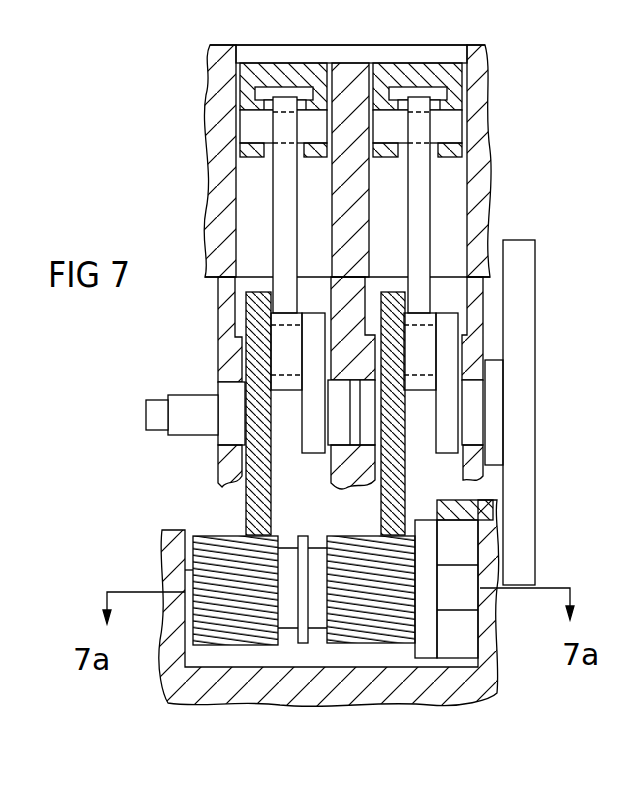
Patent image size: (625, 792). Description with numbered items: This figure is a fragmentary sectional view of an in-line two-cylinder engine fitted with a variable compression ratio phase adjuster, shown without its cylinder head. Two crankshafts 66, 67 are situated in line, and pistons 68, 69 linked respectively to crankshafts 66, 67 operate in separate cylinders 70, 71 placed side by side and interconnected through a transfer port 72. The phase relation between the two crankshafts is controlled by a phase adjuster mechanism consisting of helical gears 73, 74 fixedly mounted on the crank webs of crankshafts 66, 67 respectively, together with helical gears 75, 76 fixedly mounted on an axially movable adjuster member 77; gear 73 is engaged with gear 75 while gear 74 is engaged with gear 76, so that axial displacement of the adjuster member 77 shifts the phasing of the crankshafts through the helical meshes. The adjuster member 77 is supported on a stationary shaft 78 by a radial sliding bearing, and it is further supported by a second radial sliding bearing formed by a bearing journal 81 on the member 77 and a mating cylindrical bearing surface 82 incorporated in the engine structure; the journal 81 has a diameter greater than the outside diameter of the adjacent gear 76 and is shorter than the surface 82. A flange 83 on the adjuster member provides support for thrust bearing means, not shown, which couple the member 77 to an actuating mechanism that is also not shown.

The crankshaft 66 is at (228, 390).
The crankshaft 67 is at (450, 327).
The piston 68 is at (245, 90).
The piston 69 is at (450, 78).
The cylinder 70 is at (248, 193).
The cylinder 71 is at (447, 203).
The transfer port 72 is at (352, 58).
The helical gear 73 is at (258, 505).
The helical gear 74 is at (397, 487).
The helical gear 75 is at (207, 623).
The helical gear 76 is at (370, 620).
The axially movable adjuster member 77 is at (258, 673).
The stationary shaft 78 is at (460, 590).
The bearing journal 81 is at (425, 645).
The cylindrical bearing surface 82 is at (458, 640).
The flange 83 is at (302, 640).